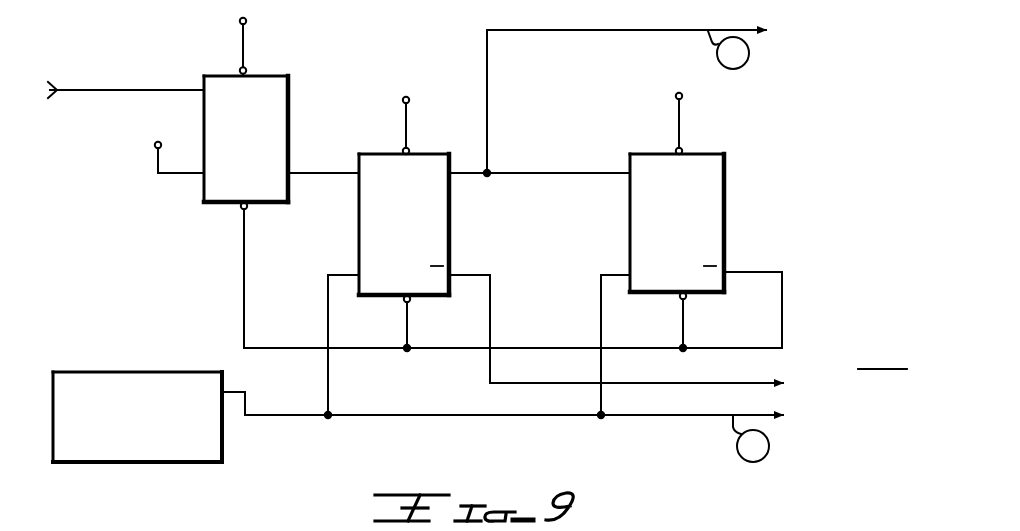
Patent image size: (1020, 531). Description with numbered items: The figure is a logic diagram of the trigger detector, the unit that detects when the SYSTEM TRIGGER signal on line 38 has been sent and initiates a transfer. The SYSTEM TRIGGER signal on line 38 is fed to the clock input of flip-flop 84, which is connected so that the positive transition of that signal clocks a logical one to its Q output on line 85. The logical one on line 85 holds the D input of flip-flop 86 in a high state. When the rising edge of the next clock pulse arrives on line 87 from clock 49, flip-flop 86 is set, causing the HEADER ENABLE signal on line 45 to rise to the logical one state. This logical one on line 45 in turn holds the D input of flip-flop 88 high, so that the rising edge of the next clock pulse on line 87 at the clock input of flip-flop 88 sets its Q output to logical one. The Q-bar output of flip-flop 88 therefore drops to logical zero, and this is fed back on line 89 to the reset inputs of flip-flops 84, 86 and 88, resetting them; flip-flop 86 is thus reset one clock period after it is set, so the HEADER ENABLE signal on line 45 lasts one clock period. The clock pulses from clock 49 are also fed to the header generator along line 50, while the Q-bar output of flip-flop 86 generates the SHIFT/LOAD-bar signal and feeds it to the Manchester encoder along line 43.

The line 38 is at (112, 93).
The flip-flop 84 is at (273, 75).
The line 85 is at (302, 177).
The flip-flop 86 is at (458, 138).
The flip-flop 88 is at (692, 153).
The line 87 is at (330, 394).
The line 89 is at (539, 348).
The line 45 is at (719, 13).
The line 43 is at (654, 369).
The line 50 is at (657, 402).
The clock 49 is at (172, 358).